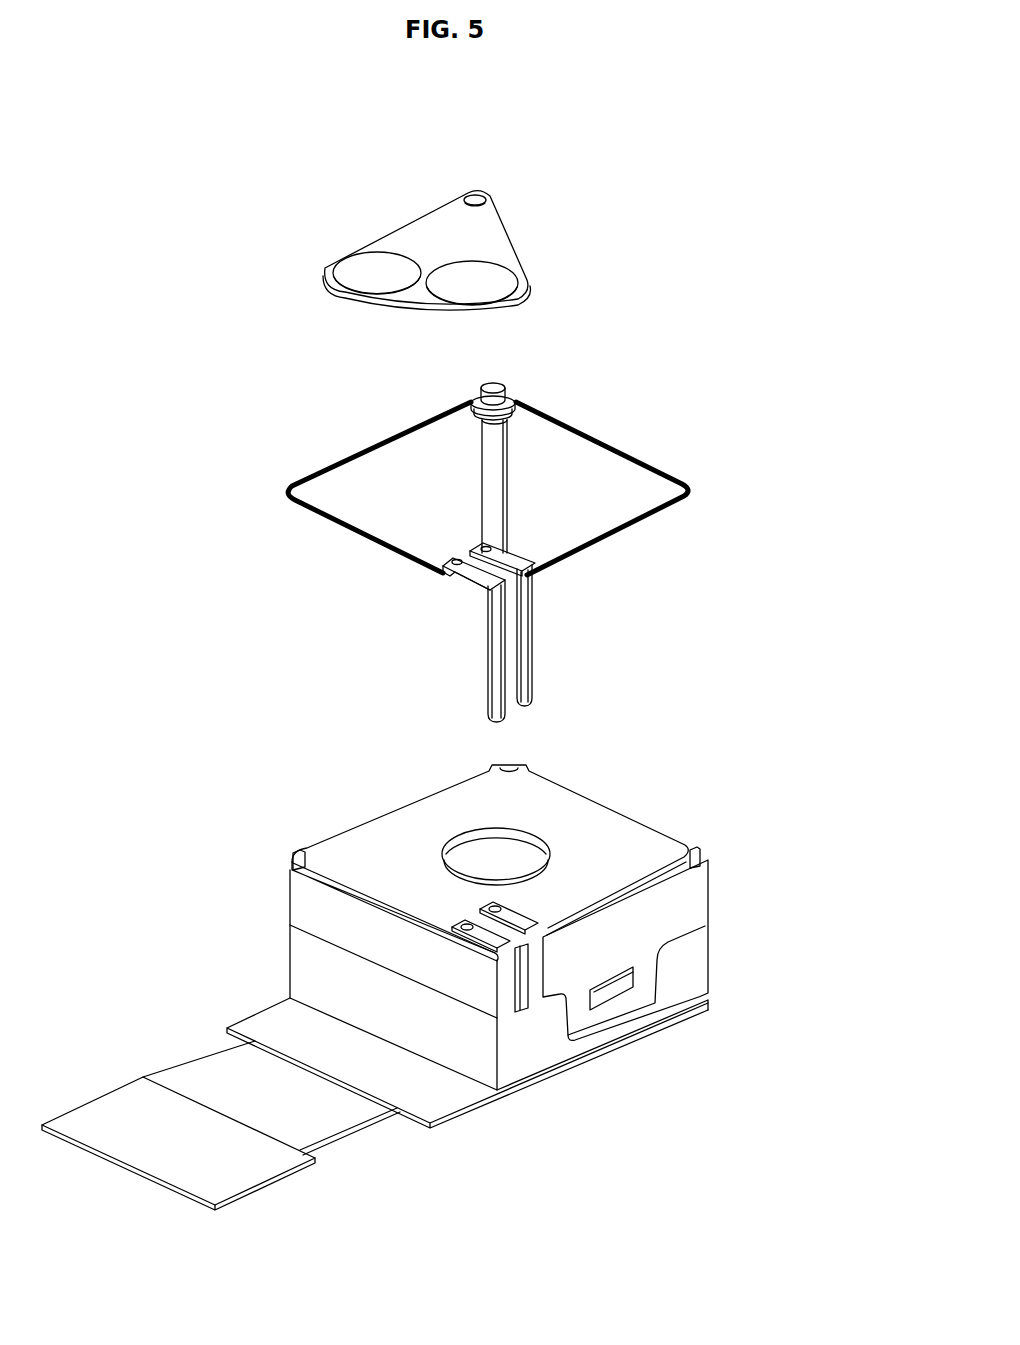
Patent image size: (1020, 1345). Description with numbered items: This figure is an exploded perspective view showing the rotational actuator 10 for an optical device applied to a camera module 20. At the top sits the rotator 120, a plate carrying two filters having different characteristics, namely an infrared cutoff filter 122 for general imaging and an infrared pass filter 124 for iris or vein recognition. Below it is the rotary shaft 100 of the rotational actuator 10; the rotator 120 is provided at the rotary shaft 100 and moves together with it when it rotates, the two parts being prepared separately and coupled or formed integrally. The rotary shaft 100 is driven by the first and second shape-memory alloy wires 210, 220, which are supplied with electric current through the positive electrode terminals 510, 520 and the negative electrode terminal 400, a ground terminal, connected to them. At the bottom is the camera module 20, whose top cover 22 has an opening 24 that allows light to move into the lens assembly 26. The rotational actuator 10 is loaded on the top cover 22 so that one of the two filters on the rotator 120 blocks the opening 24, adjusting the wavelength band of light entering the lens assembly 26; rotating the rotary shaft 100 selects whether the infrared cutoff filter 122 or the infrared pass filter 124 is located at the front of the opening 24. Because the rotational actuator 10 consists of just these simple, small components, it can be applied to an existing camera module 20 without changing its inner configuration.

The rotational actuator for an optical device 10 is at (723, 173).
The camera module 20 is at (720, 877).
The top cover 22 is at (373, 863).
The opening 24 is at (527, 835).
The lens assembly 26 is at (487, 857).
The rotary shaft 100 is at (522, 381).
The rotator 120 is at (507, 192).
The infrared cutoff filter 122 is at (372, 267).
The infrared pass filter 124 is at (478, 283).
The first shape-memory alloy wire 210 is at (322, 518).
The second shape-memory alloy wire 220 is at (632, 540).
The negative electrode terminal 400 is at (500, 478).
The positive electrode terminal 510 is at (498, 628).
The positive electrode terminal 520 is at (523, 640).